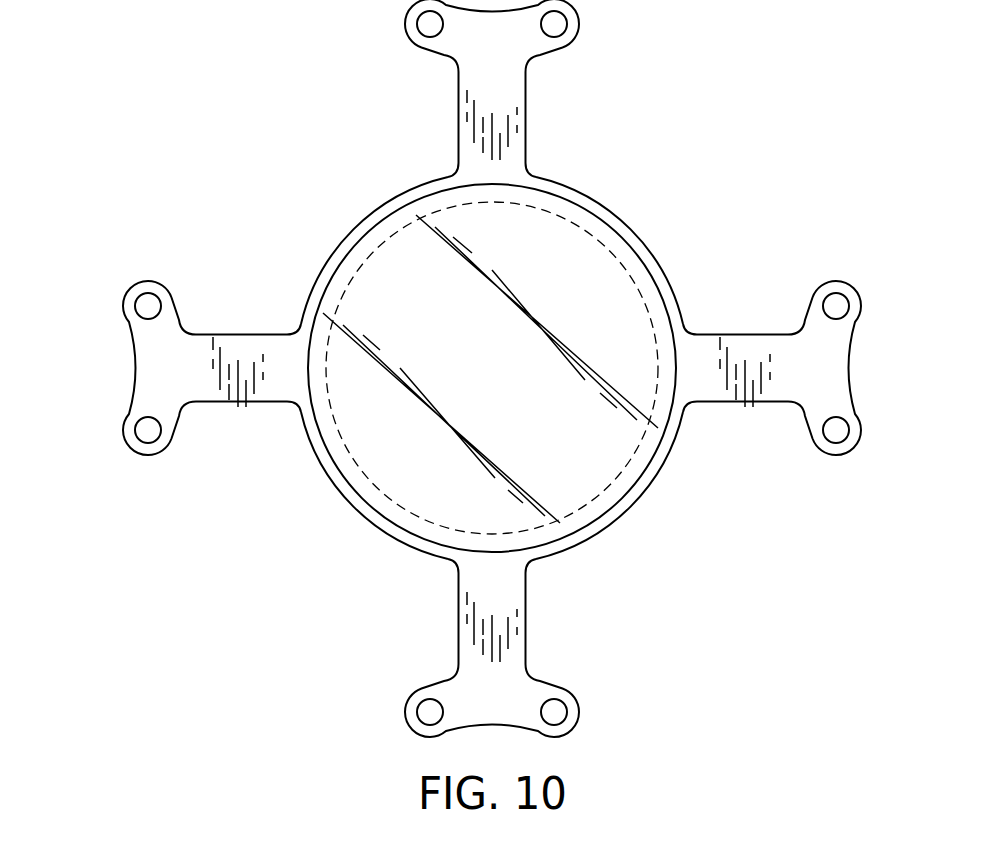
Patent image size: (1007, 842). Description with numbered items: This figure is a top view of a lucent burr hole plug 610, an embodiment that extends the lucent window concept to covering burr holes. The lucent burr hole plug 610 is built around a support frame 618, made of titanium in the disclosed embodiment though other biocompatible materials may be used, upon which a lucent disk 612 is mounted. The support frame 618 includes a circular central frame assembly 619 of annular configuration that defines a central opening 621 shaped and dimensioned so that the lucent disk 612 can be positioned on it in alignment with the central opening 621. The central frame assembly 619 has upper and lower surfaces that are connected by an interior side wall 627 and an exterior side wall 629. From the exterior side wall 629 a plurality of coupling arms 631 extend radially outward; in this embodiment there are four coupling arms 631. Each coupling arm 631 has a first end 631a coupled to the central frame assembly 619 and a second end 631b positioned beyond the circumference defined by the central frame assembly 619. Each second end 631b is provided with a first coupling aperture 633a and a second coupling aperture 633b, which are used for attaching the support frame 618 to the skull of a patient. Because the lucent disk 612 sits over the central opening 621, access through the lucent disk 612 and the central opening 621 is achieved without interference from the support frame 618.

The lucent burr hole plug 610 is at (490, 368).
The lucent disk 612 is at (405, 263).
The support frame 618 is at (816, 358).
The central frame assembly 619 is at (641, 235).
The central opening 621 is at (562, 473).
The interior side wall 627 is at (425, 520).
The exterior side wall 629 is at (667, 467).
The coupling arm 631 is at (165, 355).
The first end 631a is at (286, 403).
The second end 631b is at (135, 368).
The first coupling aperture 633a is at (846, 307).
The second coupling aperture 633b is at (848, 432).